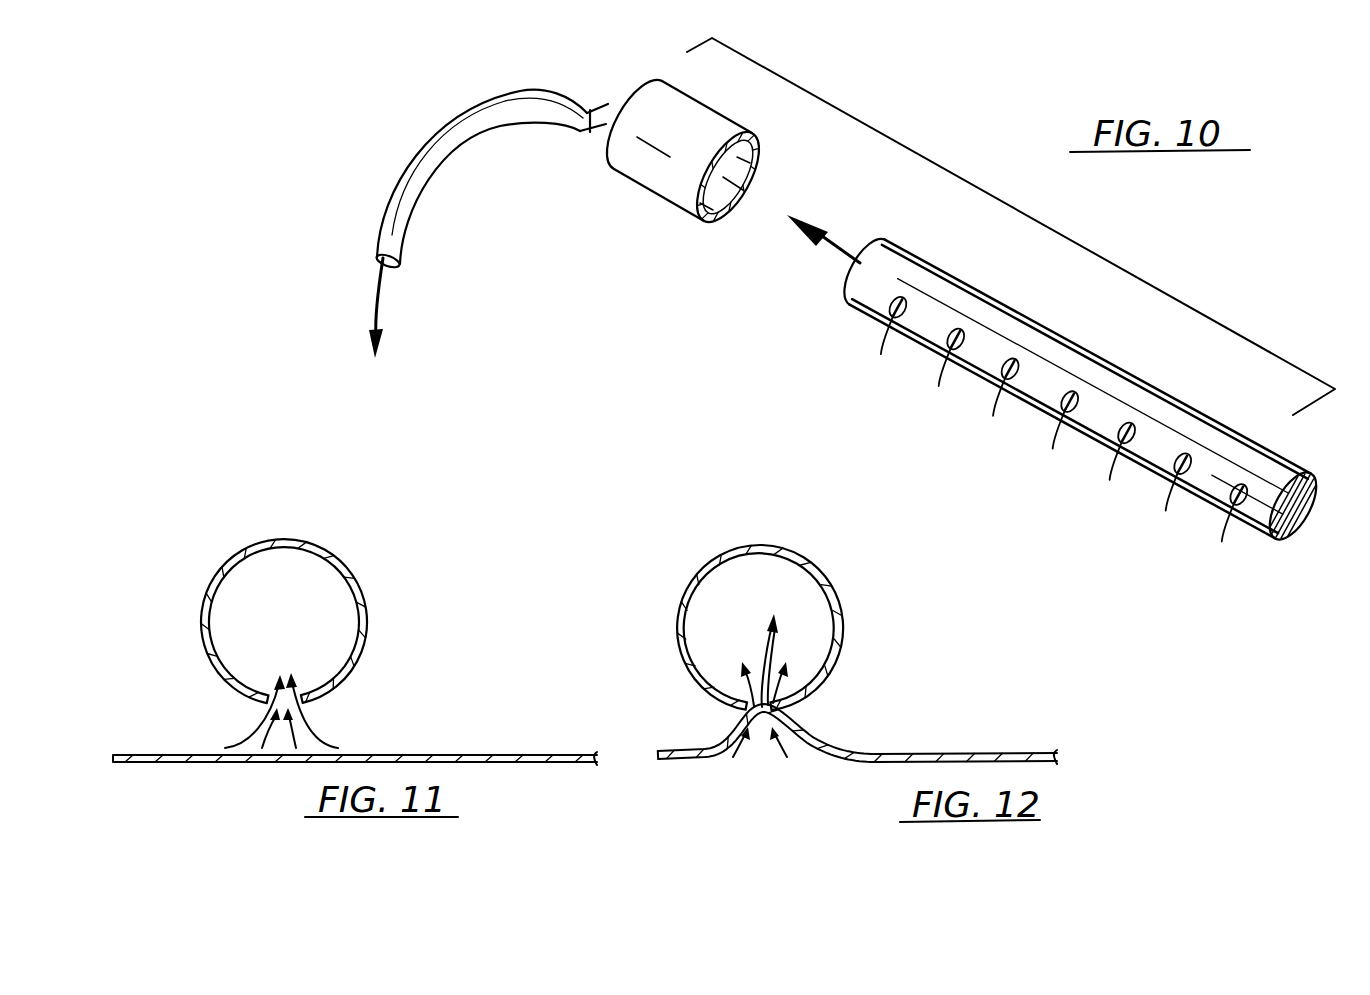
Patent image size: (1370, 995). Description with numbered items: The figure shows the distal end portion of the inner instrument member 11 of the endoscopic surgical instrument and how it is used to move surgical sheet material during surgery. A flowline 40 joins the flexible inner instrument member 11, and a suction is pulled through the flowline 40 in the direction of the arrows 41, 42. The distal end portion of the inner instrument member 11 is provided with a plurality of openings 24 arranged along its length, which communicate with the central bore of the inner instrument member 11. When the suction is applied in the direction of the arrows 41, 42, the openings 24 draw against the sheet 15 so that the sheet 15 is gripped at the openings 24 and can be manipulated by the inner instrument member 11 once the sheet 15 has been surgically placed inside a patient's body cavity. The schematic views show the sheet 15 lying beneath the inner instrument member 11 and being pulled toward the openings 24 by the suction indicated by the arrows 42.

In FIG. 10, the inner instrument member 11 is at (672, 184).
In FIG. 11, the inner instrument member 11 is at (362, 655).
In FIG. 12, the inner instrument member 11 is at (843, 605).
In FIG. 11, the sheet 15 is at (425, 757).
In FIG. 12, the sheet 15 is at (705, 754).
In FIG. 10, the openings 24 is at (868, 310).
In FIG. 12, the openings 24 is at (792, 670).
In FIG. 10, the flowline 40 is at (462, 117).
In FIG. 10, the arrows 41 is at (832, 250).
In FIG. 10, the arrows 42 is at (996, 400).
In FIG. 11, the arrows 42 is at (310, 735).
In FIG. 12, the arrows 42 is at (761, 670).